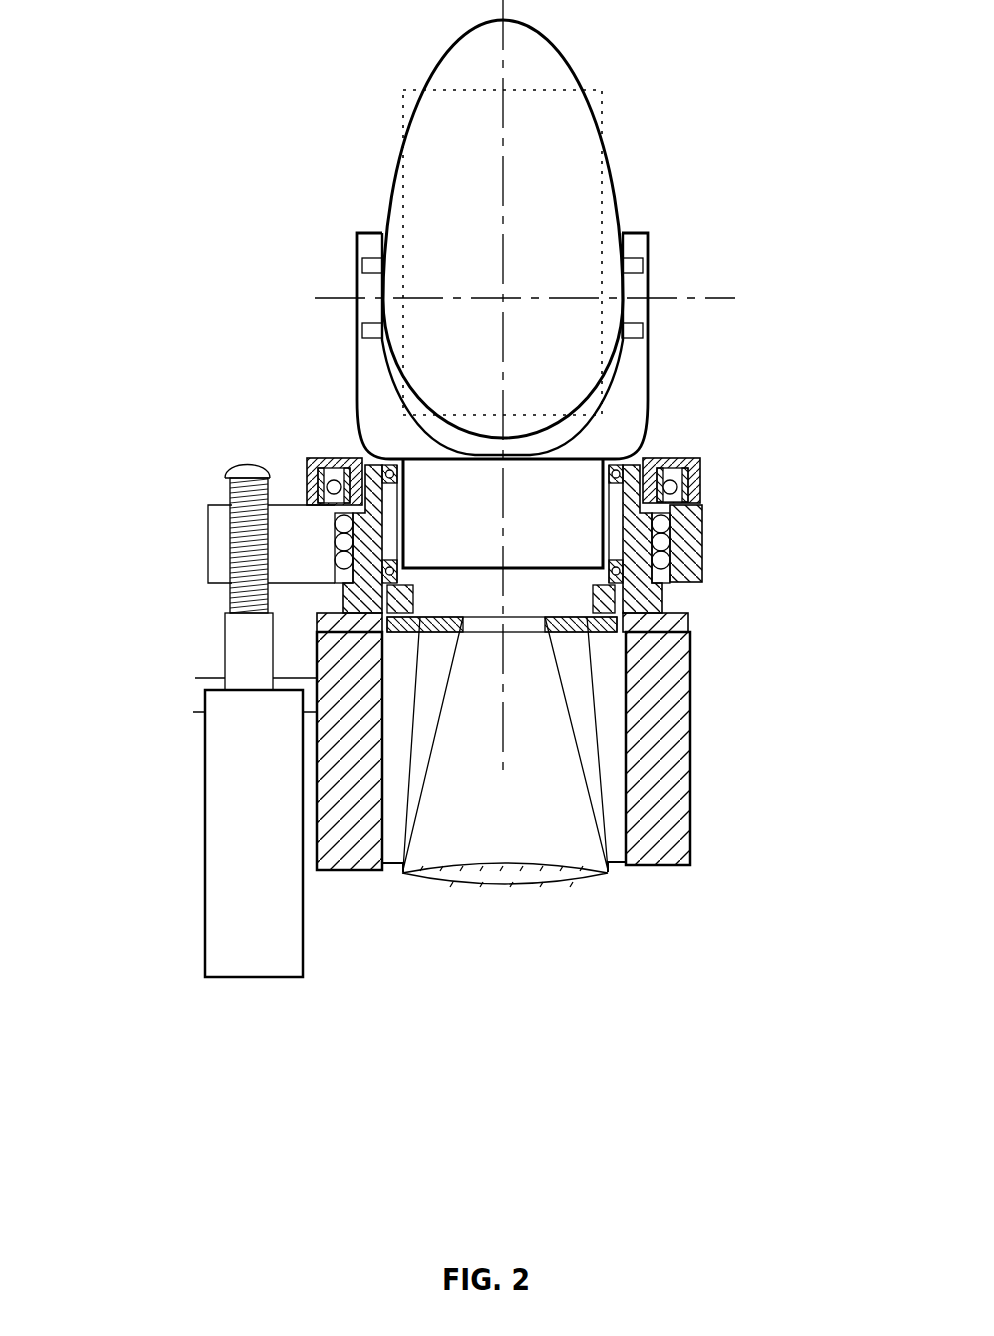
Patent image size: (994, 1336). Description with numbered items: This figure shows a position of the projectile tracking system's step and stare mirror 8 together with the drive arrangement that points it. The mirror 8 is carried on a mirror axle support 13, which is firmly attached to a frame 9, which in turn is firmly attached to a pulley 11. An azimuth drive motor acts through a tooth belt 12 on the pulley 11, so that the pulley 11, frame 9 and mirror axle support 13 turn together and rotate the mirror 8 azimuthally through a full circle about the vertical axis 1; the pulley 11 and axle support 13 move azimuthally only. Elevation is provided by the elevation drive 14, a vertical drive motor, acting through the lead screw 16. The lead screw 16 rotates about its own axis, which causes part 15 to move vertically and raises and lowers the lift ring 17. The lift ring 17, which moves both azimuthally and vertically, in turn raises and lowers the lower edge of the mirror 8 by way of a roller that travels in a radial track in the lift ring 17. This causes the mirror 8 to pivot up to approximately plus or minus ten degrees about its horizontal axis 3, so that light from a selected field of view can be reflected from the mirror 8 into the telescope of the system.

The axis 1 is at (510, 485).
The axis 3 is at (575, 298).
The step and stare mirror 8 is at (578, 160).
The frame 9 is at (605, 540).
The pulley 11 is at (605, 598).
The tooth belt 12 is at (380, 600).
The mirror axle support 13 is at (572, 512).
The elevation drive 14 is at (205, 897).
The part 15 is at (285, 515).
The lead screw 16 is at (242, 505).
The lift ring 17 is at (702, 460).